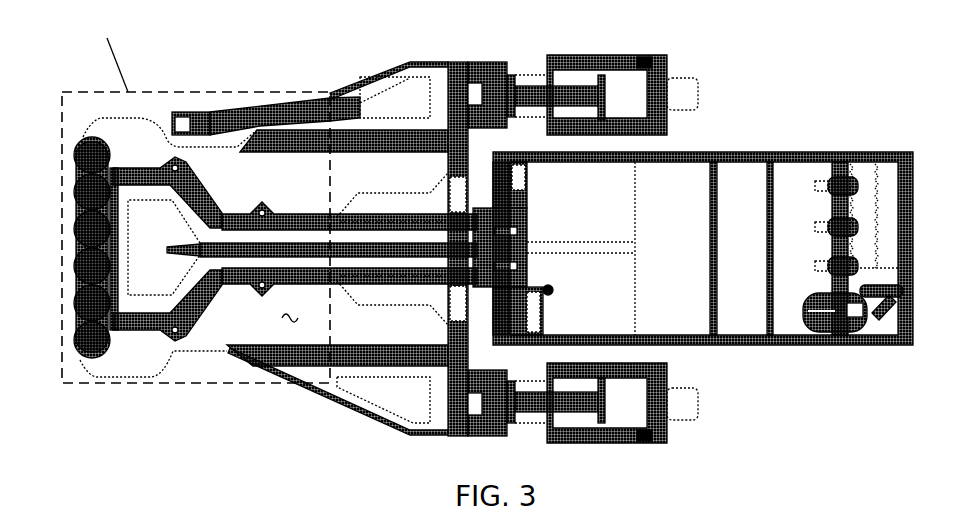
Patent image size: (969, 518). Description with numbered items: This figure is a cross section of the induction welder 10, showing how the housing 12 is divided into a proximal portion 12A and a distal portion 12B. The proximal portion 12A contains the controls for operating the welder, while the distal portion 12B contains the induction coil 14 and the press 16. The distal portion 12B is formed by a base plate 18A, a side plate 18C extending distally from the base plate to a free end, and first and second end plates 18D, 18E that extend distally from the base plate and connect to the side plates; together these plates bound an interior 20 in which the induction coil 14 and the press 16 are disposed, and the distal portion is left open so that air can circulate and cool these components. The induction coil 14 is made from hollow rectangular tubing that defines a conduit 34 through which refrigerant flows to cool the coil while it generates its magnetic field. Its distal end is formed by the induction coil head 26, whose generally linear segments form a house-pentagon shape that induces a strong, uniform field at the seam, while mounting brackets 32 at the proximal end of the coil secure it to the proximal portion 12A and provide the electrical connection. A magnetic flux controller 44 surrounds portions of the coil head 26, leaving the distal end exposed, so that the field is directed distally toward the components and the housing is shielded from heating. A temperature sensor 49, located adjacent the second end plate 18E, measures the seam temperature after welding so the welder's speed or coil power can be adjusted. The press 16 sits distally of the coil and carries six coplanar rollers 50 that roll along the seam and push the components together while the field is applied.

The induction welder 10 is at (877, 78).
The housing 12 is at (370, 427).
The proximal portion 12A is at (827, 347).
The distal portion 12B is at (382, 66).
The induction coil 14 is at (211, 328).
The press 16 is at (60, 350).
The base plate 18A is at (460, 357).
The second side plate 18C is at (140, 140).
The first end plate 18D is at (338, 357).
The second end plate 18E is at (388, 135).
The interior 20 is at (288, 324).
The induction coil head 26 is at (150, 328).
The mounting brackets 32 is at (532, 207).
The conduit 34 is at (229, 232).
The magnetic flux controller 44 is at (289, 210).
The temperature sensor 49 is at (197, 118).
The rollers 50 is at (80, 142).